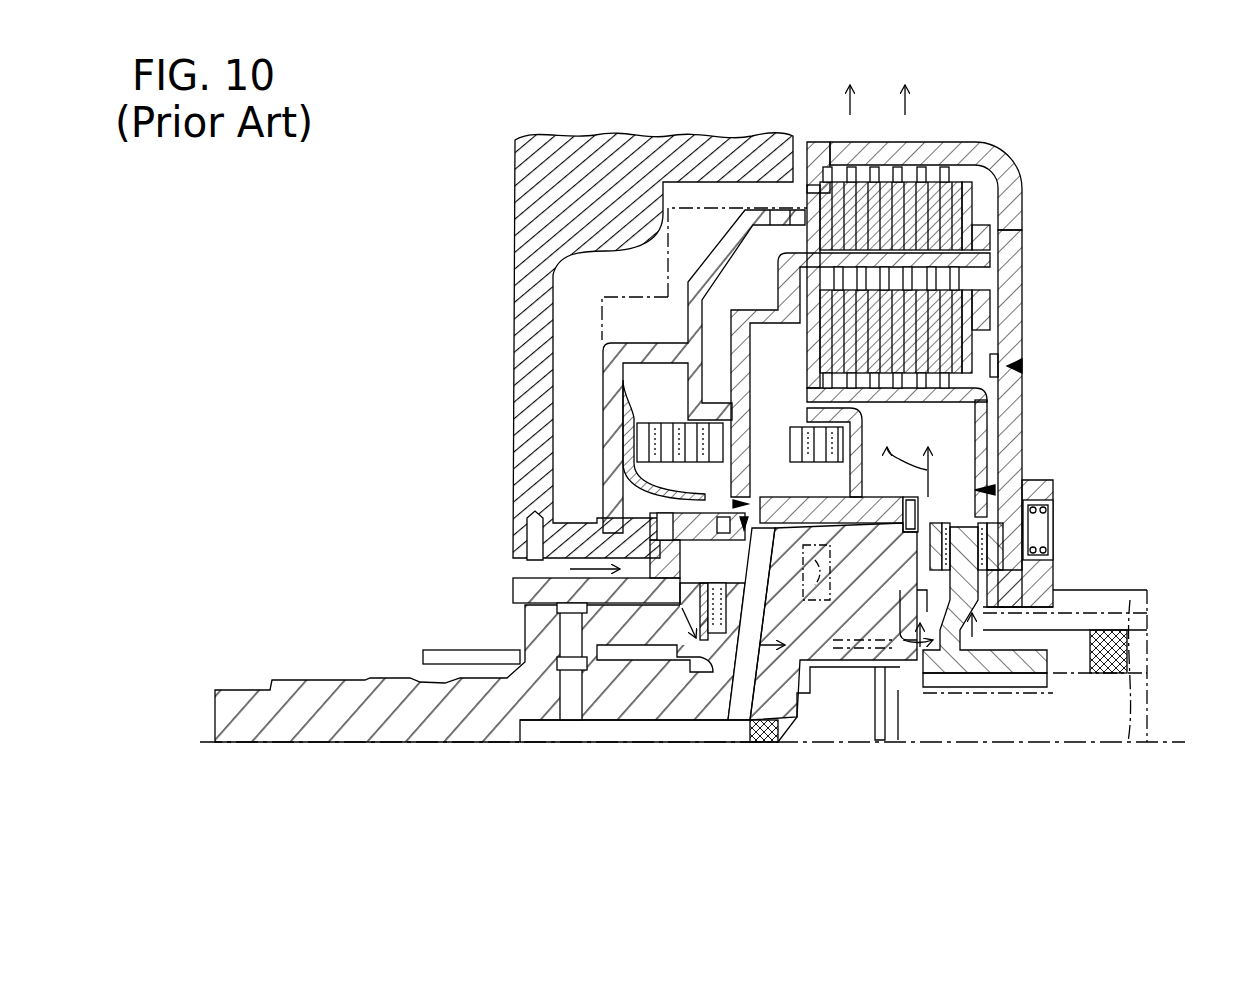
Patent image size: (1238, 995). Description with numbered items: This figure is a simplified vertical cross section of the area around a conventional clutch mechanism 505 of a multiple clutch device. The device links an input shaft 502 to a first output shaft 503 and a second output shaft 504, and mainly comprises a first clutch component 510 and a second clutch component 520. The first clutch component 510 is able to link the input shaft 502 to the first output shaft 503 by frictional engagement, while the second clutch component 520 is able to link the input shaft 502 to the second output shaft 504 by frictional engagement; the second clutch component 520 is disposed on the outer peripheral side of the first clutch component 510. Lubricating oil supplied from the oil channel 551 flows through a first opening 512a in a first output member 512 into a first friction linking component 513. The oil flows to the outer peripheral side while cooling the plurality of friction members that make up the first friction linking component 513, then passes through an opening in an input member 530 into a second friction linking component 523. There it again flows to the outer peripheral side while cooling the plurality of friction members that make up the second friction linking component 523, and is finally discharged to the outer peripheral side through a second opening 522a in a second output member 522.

The input member 530 is at (771, 295).
The second opening 522a is at (833, 140).
The second clutch component 520 is at (935, 133).
The clutch mechanism 505 is at (1040, 128).
The second output member 522 is at (1022, 188).
The second friction linking component 523 is at (983, 214).
The first clutch component 510 is at (992, 315).
The first friction linking component 513 is at (977, 332).
The first output member 512 is at (987, 411).
The first opening 512a is at (935, 410).
The second output shaft 504 is at (1118, 592).
The input shaft 502 is at (410, 688).
The oil channel 551 is at (923, 620).
The first output shaft 503 is at (1068, 723).